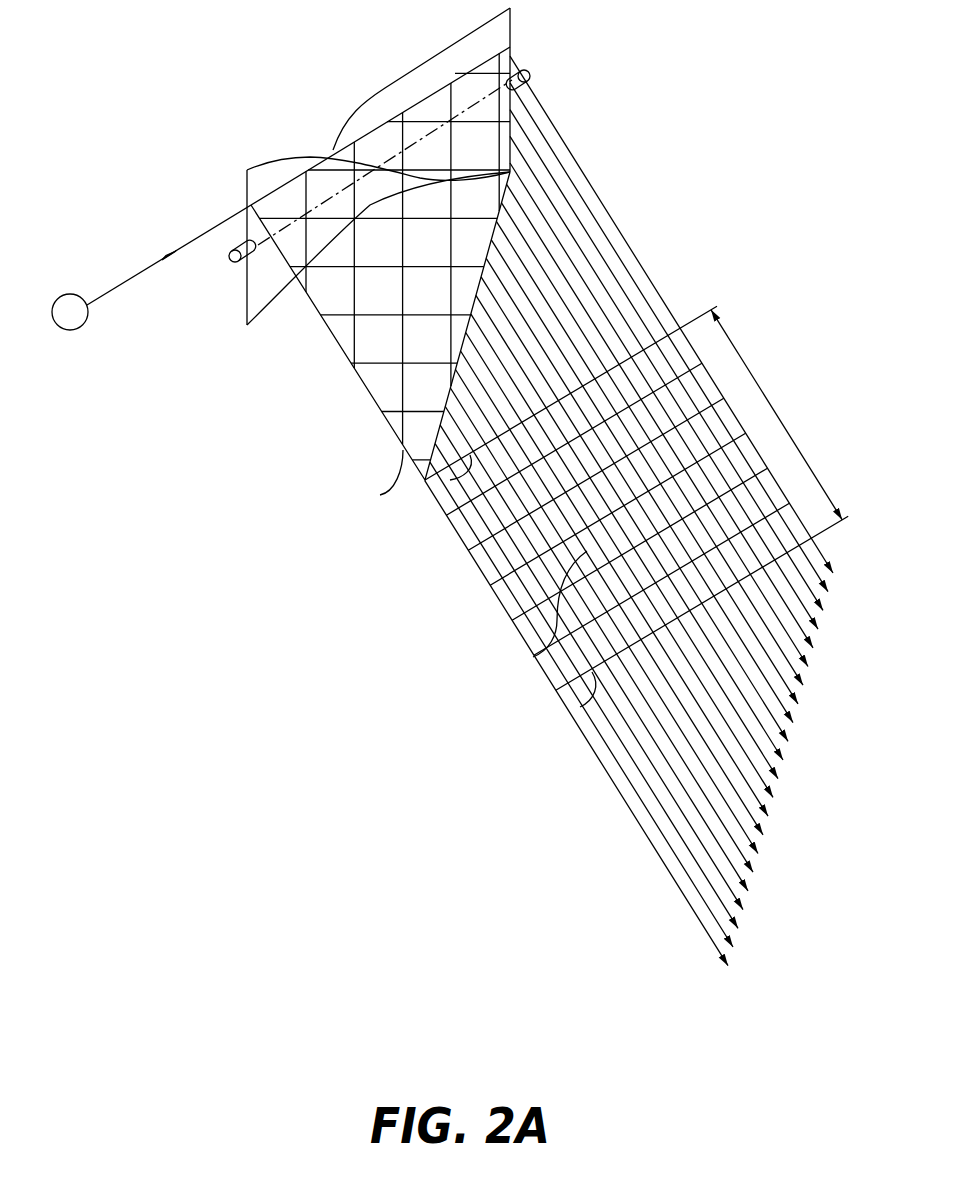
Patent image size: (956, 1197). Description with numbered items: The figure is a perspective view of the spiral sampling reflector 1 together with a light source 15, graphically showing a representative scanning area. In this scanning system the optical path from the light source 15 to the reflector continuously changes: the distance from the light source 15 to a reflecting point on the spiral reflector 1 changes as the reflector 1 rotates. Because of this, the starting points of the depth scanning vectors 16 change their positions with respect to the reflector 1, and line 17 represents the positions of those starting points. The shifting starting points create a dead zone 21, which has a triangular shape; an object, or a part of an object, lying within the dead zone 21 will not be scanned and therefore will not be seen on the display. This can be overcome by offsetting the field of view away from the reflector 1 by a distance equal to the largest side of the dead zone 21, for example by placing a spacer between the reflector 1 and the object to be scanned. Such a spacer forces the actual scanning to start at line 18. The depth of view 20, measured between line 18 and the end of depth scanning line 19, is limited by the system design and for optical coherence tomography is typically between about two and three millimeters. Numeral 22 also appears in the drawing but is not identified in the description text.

The spiral reflector 1 is at (400, 82).
The light source 15 is at (73, 296).
The depth scanning vectors 16 is at (603, 770).
The line 17 is at (403, 450).
The line 18 is at (483, 450).
The end of depth scanning line 19 is at (580, 707).
The depth of view 20 is at (763, 388).
The dead zone 21 is at (383, 293).
The wave profile segment 22 is at (533, 657).